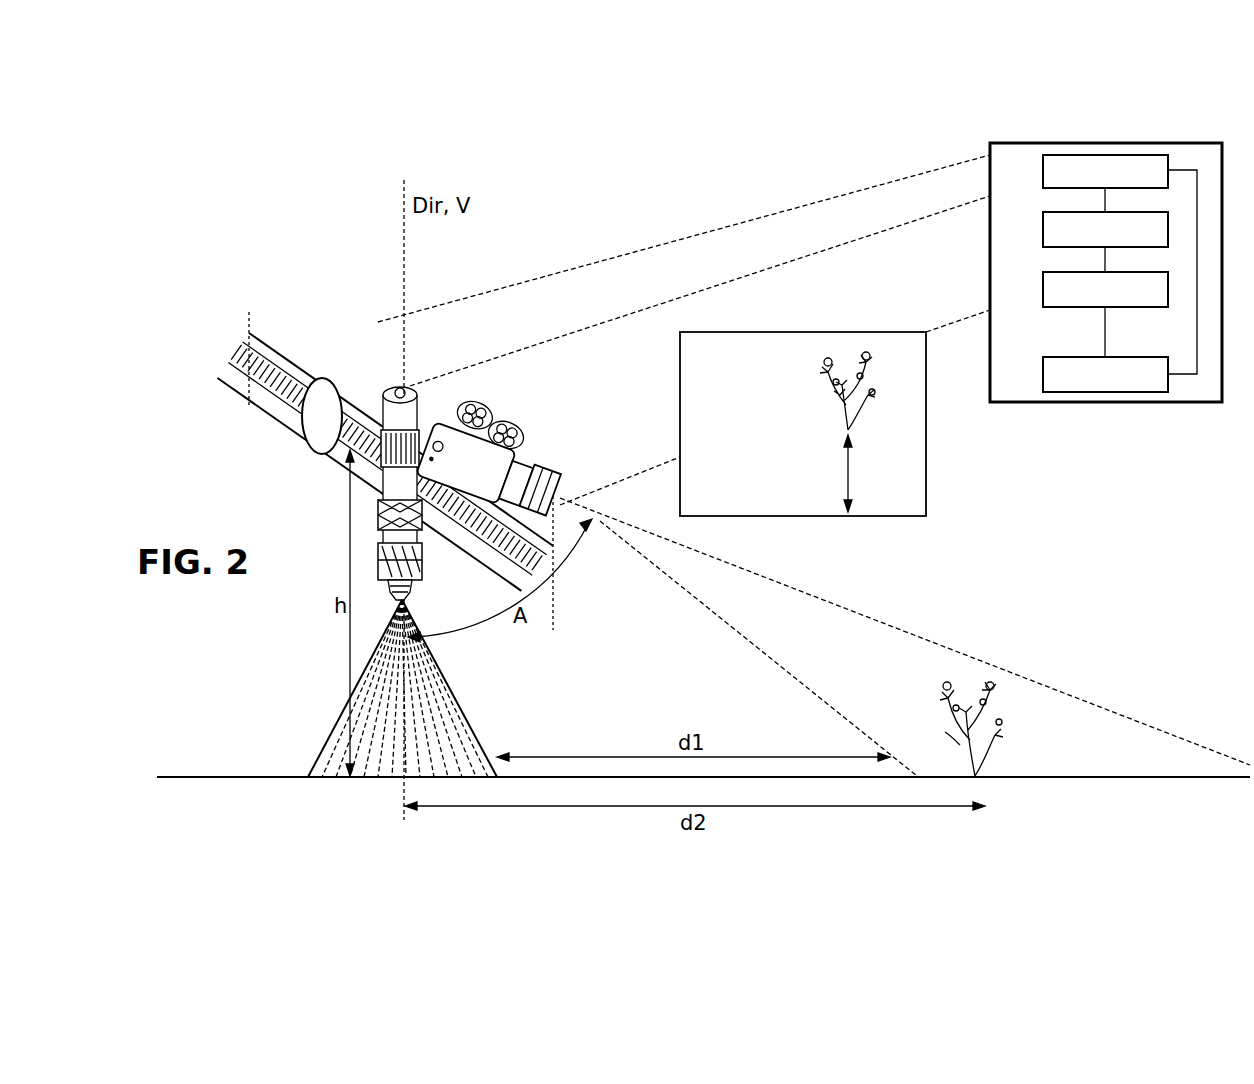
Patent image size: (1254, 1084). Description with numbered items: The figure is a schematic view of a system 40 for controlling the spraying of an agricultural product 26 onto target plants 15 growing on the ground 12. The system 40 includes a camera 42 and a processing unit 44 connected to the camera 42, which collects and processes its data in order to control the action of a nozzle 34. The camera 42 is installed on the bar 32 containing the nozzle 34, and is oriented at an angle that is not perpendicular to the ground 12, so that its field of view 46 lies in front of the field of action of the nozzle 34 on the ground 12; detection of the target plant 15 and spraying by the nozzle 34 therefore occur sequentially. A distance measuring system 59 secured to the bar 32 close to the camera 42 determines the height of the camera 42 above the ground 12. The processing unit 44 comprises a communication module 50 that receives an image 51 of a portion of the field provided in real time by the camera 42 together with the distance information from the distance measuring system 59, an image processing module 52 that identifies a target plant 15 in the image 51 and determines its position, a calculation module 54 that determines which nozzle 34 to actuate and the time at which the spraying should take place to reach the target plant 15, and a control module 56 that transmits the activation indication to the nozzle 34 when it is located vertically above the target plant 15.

The ground 12 is at (201, 775).
The target plant 15 is at (1015, 720).
The agricultural product 26 is at (463, 702).
The bar 32 is at (272, 358).
The nozzle 34 is at (408, 390).
The system 40 is at (228, 255).
The camera 42 is at (505, 422).
The processing unit 44 is at (1106, 307).
The field of view 46 is at (987, 656).
The communication module 50 is at (1105, 171).
The image 51 is at (927, 478).
The image processing module 52 is at (1105, 229).
The calculation module 54 is at (1105, 289).
The control module 56 is at (1105, 374).
The distance measuring system 59 is at (328, 379).